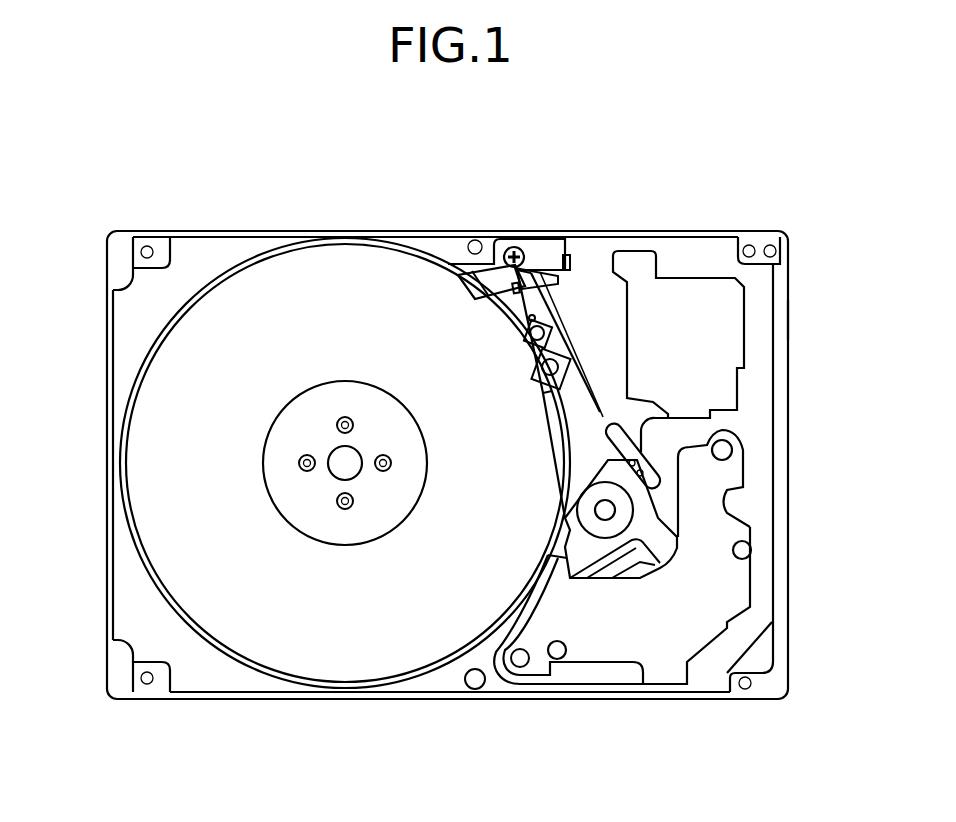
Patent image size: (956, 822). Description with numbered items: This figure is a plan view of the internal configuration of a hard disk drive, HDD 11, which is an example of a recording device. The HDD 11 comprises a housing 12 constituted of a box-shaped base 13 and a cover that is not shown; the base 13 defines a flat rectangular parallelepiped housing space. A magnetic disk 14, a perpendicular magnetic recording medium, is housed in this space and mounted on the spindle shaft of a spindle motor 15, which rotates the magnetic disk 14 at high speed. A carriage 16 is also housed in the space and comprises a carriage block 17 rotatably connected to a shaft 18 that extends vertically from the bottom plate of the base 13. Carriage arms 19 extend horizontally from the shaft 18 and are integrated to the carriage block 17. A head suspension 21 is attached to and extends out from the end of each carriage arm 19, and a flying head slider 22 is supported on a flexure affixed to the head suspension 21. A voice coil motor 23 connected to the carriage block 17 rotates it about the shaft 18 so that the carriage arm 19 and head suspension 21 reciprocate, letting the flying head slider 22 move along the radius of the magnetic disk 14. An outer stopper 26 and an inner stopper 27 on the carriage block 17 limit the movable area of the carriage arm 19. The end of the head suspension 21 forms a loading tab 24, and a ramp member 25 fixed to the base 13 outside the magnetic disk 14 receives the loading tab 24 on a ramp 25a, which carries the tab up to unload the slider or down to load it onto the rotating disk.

The HDD 11 is at (104, 188).
The housing 12 is at (432, 227).
The base 13 is at (790, 317).
The magnetic disk 14 is at (150, 364).
The spindle motor 15 is at (325, 446).
The carriage 16 is at (540, 450).
The carriage block 17 is at (552, 521).
The shaft 18 is at (617, 510).
The carriage arm 19 is at (540, 407).
The head suspension 21 is at (544, 306).
The flying head slider 22 is at (517, 298).
The voice coil motor 23 is at (765, 587).
The loading tab 24 is at (476, 274).
The ramp member 25 is at (582, 247).
The ramp 25a is at (480, 298).
The outer stopper 26 is at (560, 658).
The inner stopper 27 is at (752, 540).